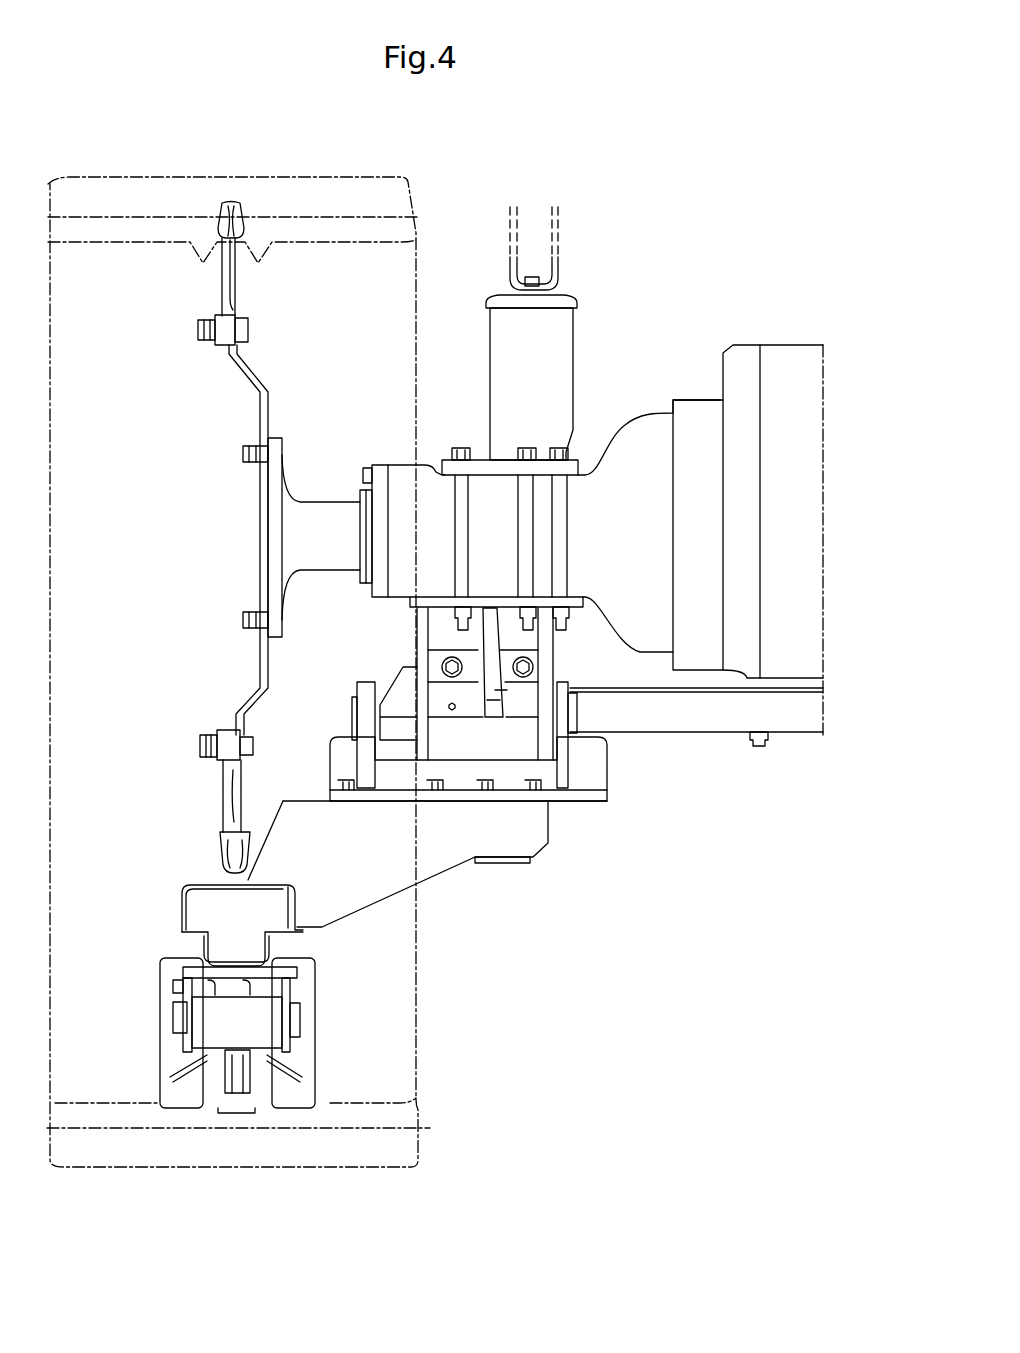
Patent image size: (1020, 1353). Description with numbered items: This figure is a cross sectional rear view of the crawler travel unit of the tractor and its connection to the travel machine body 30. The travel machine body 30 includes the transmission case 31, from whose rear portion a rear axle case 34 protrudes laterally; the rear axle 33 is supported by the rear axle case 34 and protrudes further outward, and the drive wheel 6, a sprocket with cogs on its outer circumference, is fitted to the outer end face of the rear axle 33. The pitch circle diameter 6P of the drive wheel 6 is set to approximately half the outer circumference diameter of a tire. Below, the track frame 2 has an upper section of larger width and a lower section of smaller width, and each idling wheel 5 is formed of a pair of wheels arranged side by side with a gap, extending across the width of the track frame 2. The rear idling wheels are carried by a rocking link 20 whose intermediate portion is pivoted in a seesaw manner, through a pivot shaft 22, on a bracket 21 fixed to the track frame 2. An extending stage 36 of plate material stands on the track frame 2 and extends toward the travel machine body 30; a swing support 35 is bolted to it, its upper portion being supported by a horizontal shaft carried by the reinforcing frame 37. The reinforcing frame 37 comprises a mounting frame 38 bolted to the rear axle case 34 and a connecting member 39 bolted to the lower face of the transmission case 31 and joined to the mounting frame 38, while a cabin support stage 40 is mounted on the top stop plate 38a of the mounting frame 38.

The track frame 2 is at (209, 1019).
The idling wheel 5 is at (292, 1093).
The drive wheel 6 is at (245, 370).
The pitch circle diameter 6P is at (340, 187).
The rocking link 20 is at (183, 1082).
The bracket 21 is at (190, 975).
The pivot shaft 22 is at (173, 1017).
The travel machine body 30 is at (711, 287).
The transmission case 31 is at (785, 355).
The rear axle 33 is at (313, 528).
The rear axle case 34 is at (585, 470).
The swing support 35 is at (457, 775).
The extending stage 36 is at (373, 884).
The reinforcing frame 37 is at (634, 762).
The mounting frame 38 is at (547, 715).
The top stop plate 38a is at (478, 470).
The connecting member 39 is at (697, 712).
The cabin support stage 40 is at (490, 343).